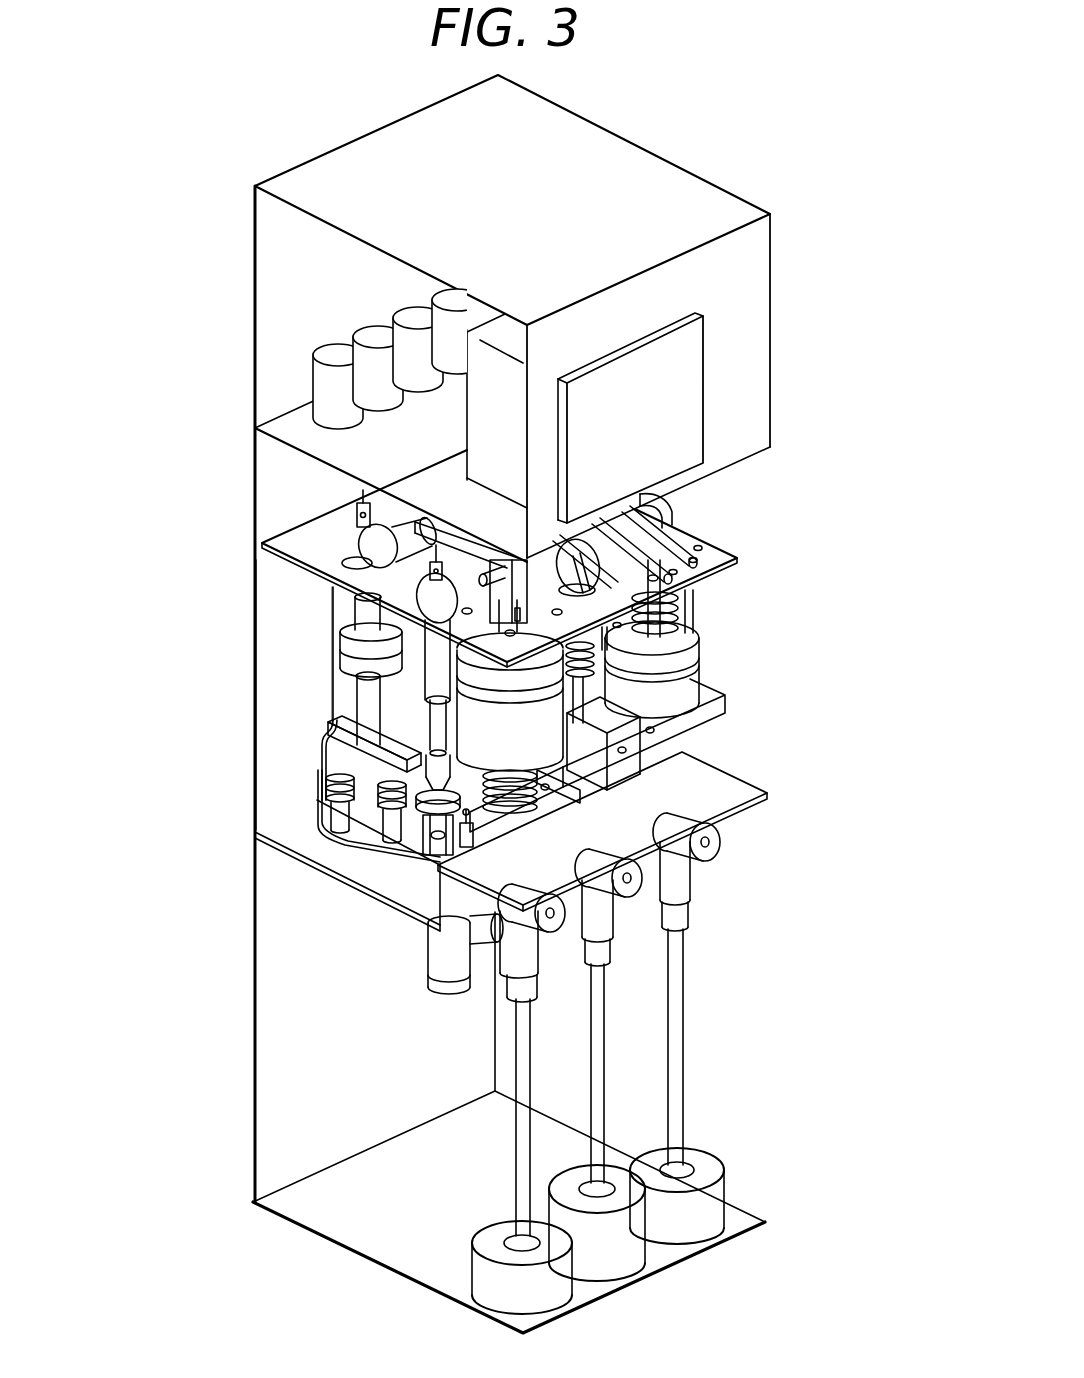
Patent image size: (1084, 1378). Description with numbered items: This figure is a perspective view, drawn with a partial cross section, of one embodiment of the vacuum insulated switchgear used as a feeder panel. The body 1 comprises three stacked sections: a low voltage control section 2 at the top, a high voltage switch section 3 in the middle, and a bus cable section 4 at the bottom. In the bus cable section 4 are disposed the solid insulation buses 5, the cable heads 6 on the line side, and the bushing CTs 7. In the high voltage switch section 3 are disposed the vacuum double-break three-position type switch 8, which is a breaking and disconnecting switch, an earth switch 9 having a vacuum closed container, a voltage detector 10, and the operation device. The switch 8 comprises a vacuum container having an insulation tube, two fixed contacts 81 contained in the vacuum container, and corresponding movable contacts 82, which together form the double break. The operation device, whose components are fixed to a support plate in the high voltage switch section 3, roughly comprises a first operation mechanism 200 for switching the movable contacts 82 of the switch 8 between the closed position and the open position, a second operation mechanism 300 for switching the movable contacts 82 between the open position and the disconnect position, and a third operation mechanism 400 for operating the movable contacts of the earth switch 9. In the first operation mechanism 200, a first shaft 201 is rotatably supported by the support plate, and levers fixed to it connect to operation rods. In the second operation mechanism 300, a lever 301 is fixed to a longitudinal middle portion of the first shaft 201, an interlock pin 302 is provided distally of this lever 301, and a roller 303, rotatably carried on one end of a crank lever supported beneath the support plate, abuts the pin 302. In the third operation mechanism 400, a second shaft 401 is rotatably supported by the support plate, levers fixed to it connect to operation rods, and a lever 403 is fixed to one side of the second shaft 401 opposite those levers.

The body 1 is at (790, 257).
The low voltage control section 2 is at (275, 318).
The high voltage switch section 3 is at (278, 618).
The bus cable section 4 is at (272, 967).
The solid insulation bus 5 is at (421, 966).
The cable head 6 is at (717, 850).
The bushing CT 7 is at (725, 1172).
The vacuum double-break three-position type switch 8 is at (300, 768).
The earth switch 9 is at (420, 860).
The voltage detector 10 is at (437, 885).
The fixed contact 81 is at (323, 808).
The movable contact 82 is at (323, 786).
The first operation mechanism 200 is at (557, 737).
The first shaft 201 is at (372, 541).
The second operation mechanism 300 is at (590, 663).
The lever 301 is at (682, 532).
The interlock pin 302 is at (677, 500).
The roller 303 is at (648, 598).
The third operation mechanism 400 is at (715, 634).
The second shaft 401 is at (284, 562).
The lever 403 is at (693, 542).